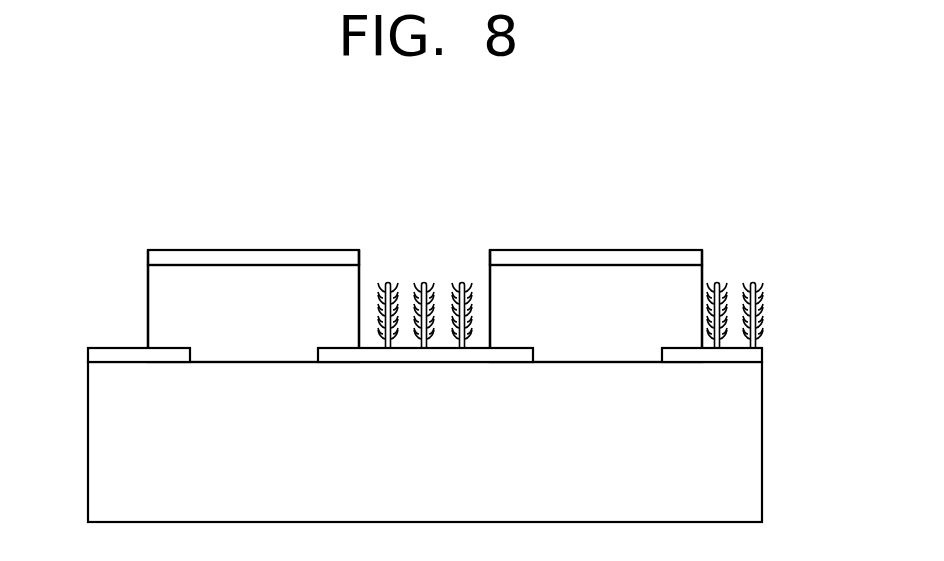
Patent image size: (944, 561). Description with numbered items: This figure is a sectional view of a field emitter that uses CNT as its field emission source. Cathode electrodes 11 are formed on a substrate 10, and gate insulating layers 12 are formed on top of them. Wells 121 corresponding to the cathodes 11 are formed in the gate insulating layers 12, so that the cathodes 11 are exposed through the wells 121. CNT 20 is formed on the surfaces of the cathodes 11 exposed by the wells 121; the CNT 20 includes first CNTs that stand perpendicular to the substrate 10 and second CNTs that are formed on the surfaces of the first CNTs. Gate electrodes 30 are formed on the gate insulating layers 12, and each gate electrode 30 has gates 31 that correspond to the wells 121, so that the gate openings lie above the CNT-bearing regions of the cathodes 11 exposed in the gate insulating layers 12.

The substrate 10 is at (762, 443).
The cathode electrode 11 is at (102, 353).
The gate insulating layer 12 is at (425, 313).
The CNT 20 is at (418, 250).
The gate electrode 30 is at (203, 249).
The gate 31 is at (360, 252).
The well 121 is at (147, 295).